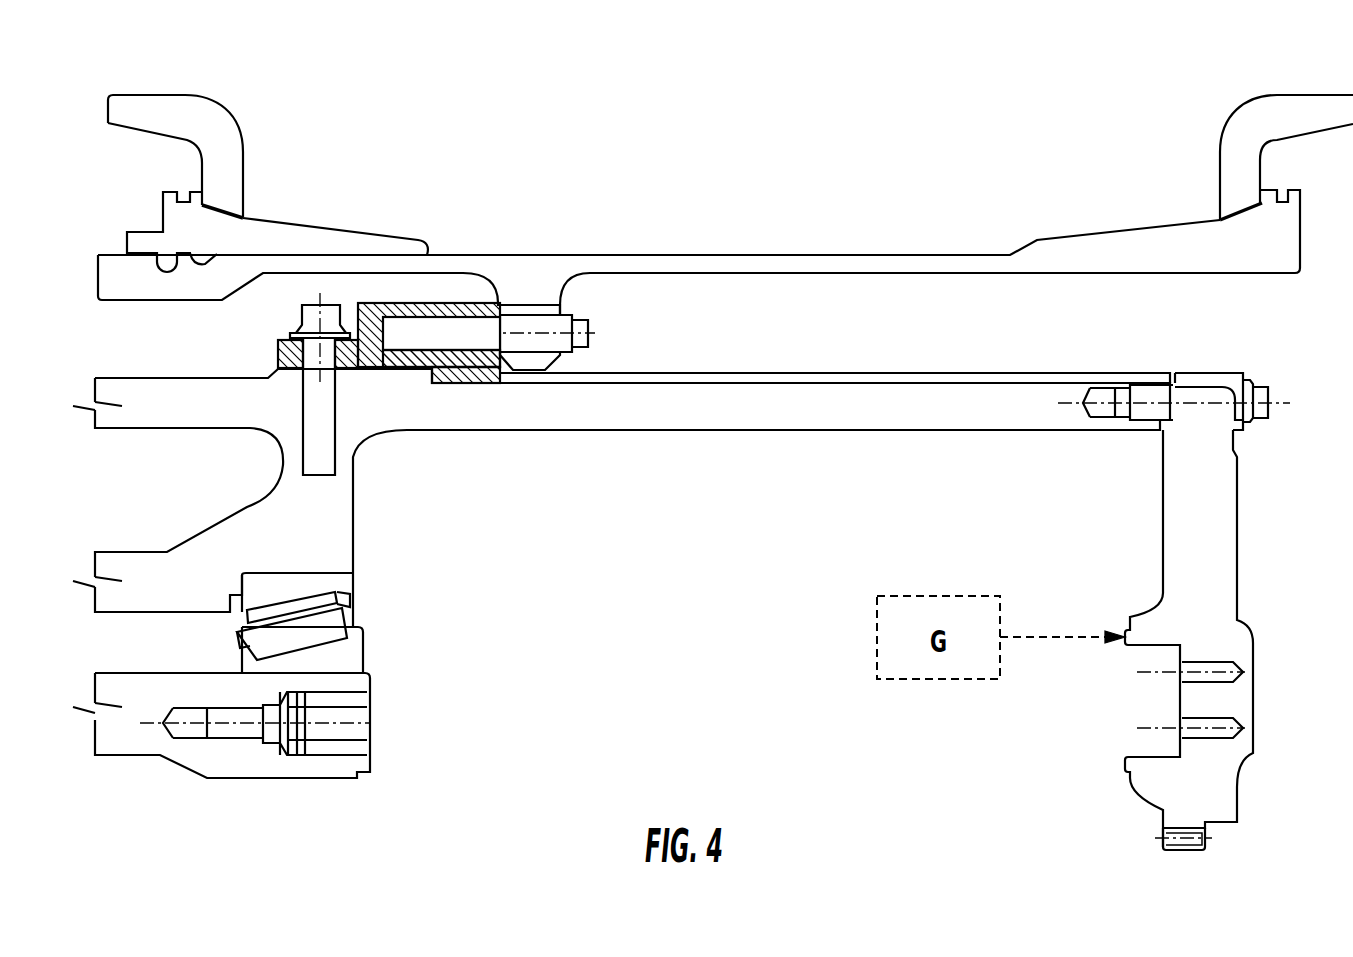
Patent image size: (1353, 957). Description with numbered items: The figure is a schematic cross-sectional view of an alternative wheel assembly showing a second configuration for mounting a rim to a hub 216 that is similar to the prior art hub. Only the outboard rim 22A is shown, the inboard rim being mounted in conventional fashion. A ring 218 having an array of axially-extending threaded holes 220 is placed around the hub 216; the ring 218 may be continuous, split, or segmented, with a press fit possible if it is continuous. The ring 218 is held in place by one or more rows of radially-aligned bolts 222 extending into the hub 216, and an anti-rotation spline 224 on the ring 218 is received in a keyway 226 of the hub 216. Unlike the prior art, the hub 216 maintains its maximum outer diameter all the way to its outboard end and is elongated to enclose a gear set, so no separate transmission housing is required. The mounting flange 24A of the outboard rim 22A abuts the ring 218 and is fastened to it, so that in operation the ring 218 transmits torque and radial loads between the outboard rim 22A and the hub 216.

The outboard rim 22A is at (1098, 232).
The mounting flange 24A is at (535, 285).
The hub 216 is at (312, 498).
The ring 218 is at (383, 303).
The threaded holes 220 is at (423, 350).
The bolts 222 is at (302, 312).
The spline 224 is at (434, 367).
The keyway 226 is at (750, 373).